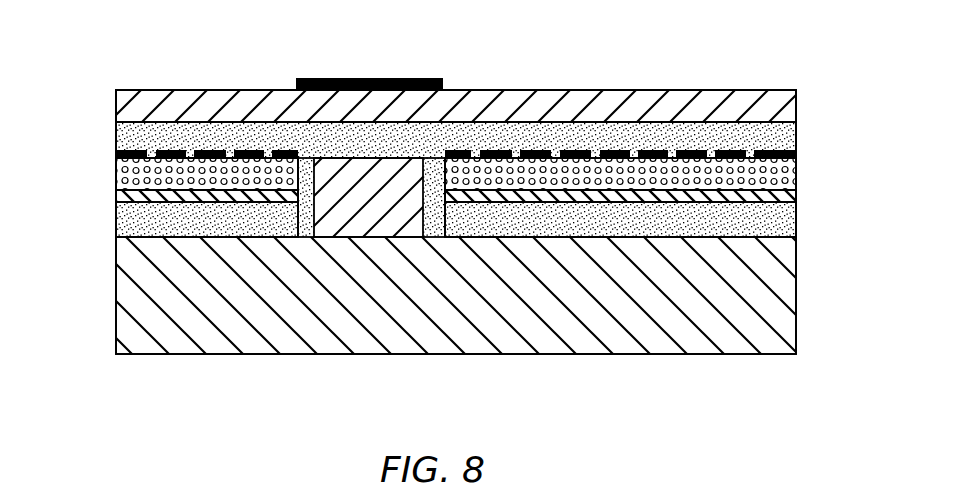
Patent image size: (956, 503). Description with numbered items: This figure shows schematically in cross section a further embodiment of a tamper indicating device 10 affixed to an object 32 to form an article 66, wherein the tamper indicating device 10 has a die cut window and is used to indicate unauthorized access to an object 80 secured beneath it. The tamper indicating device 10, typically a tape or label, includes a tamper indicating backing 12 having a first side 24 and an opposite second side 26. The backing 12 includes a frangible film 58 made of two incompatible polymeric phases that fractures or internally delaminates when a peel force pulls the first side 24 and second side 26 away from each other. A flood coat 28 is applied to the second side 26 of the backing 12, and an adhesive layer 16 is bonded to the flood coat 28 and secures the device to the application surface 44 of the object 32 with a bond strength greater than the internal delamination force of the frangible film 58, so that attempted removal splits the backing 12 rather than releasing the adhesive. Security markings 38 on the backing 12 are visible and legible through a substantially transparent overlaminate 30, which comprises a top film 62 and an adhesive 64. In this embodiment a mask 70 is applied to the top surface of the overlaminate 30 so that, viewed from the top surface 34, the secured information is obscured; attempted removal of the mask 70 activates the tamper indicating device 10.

The tamper indicating device 10 is at (84, 99).
The tamper indicating backing 12 is at (106, 160).
The adhesive layer 16 is at (671, 225).
The first side 24 is at (755, 157).
The second side 26 is at (773, 194).
The flood coat 28 is at (520, 198).
The overlaminate 30 is at (803, 92).
The object 32 is at (291, 303).
The top surface 34 is at (803, 72).
The security markings 38 is at (228, 150).
The application surface 44 is at (190, 228).
The frangible film 58 is at (142, 182).
The top film 62 is at (553, 110).
The adhesive 64 is at (263, 132).
The article 66 is at (642, 44).
The mask 70 is at (328, 78).
The object 80 is at (363, 222).